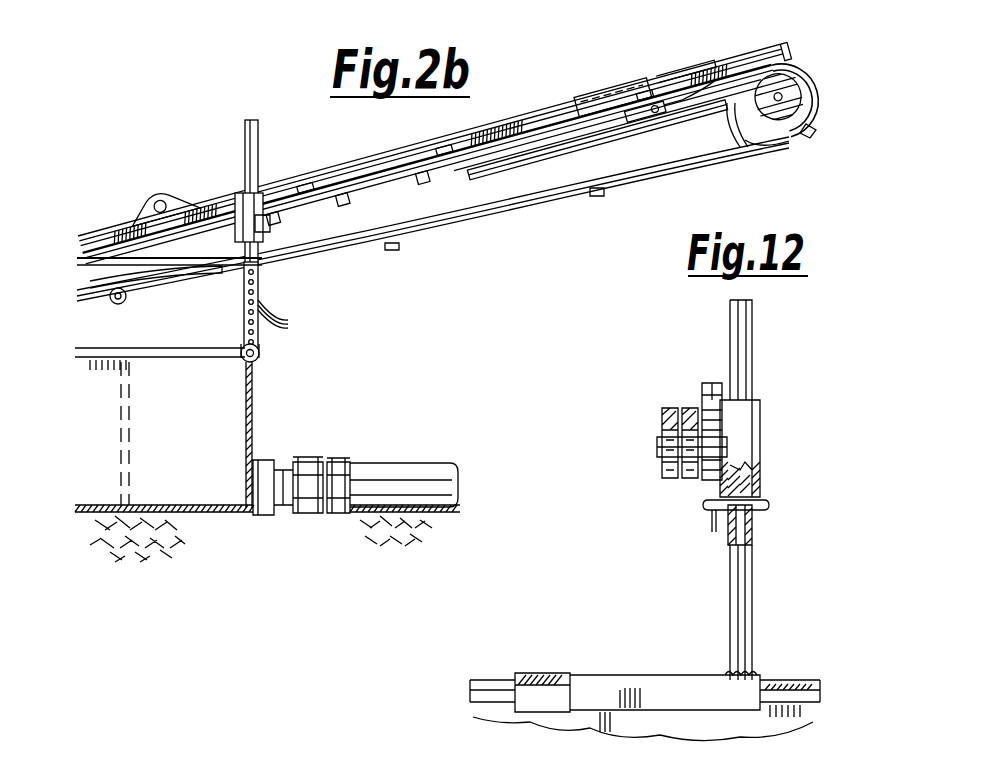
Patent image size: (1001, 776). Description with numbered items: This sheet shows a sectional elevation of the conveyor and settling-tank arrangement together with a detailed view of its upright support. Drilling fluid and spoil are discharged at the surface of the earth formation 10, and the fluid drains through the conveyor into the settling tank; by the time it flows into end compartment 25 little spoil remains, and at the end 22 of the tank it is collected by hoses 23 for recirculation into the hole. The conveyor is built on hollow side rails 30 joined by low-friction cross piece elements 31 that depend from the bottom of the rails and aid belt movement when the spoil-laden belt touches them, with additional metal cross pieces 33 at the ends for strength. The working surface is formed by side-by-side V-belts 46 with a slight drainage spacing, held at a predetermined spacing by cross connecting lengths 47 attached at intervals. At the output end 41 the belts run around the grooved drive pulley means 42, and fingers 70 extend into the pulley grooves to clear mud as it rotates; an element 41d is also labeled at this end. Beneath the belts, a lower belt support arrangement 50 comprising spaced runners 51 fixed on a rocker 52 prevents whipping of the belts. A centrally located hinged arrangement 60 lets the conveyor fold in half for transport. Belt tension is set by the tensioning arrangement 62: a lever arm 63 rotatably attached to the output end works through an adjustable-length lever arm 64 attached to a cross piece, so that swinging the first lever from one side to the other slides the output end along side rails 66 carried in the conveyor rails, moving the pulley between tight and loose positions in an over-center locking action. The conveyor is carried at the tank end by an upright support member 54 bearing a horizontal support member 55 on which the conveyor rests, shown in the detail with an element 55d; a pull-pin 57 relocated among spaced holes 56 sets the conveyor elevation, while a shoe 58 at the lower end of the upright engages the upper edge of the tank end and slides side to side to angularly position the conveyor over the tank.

In FIG. 2B, the earth formation 10 is at (410, 510).
In FIG. 2B, the end of tank 22 is at (256, 408).
In FIG. 12, the end of tank 22 is at (800, 680).
In FIG. 2B, the hoses 23 is at (420, 465).
In FIG. 2B, the end compartment 25 is at (160, 426).
In FIG. 12, the side rails 30 is at (714, 382).
In FIG. 2B, the cross piece elements 31 is at (425, 182).
In FIG. 2B, the metal cross pieces 33 is at (570, 100).
In FIG. 2B, the output end of conveyor 41 is at (722, 48).
In FIG. 2B, the belt end strip 41d is at (740, 147).
In FIG. 2B, the drive pulley means 42 is at (790, 80).
In FIG. 12, the V-belts 46 is at (690, 408).
In FIG. 2B, the cross connecting lengths 47 is at (438, 148).
In FIG. 2B, the lower belt support arrangement 50 is at (168, 298).
In FIG. 2B, the runners 51 is at (105, 300).
In FIG. 2B, the rocker 52 is at (122, 304).
In FIG. 2B, the upright support member 54 is at (258, 150).
In FIG. 2B, the horizontal support member 55 is at (266, 232).
In FIG. 12, the horizontal support member 55 is at (665, 475).
In FIG. 2B, the collar bracket 55d is at (240, 210).
In FIG. 12, the collar bracket 55d is at (760, 432).
In FIG. 2B, the spaced holes 56 is at (279, 307).
In FIG. 12, the spaced holes 56 is at (752, 555).
In FIG. 2B, the pull-pin 57 is at (240, 270).
In FIG. 12, the pull-pin 57 is at (708, 505).
In FIG. 2B, the shoe 58 is at (260, 352).
In FIG. 12, the shoe 58 is at (640, 675).
In FIG. 2B, the hinged arrangement 60 is at (146, 178).
In FIG. 2B, the tensioning arrangement 62 is at (603, 150).
In FIG. 2B, the lever arm 63 is at (480, 182).
In FIG. 2B, the lever arm 64 is at (655, 138).
In FIG. 2B, the side rails 66 is at (665, 62).
In FIG. 2B, the fingers 70 is at (748, 142).